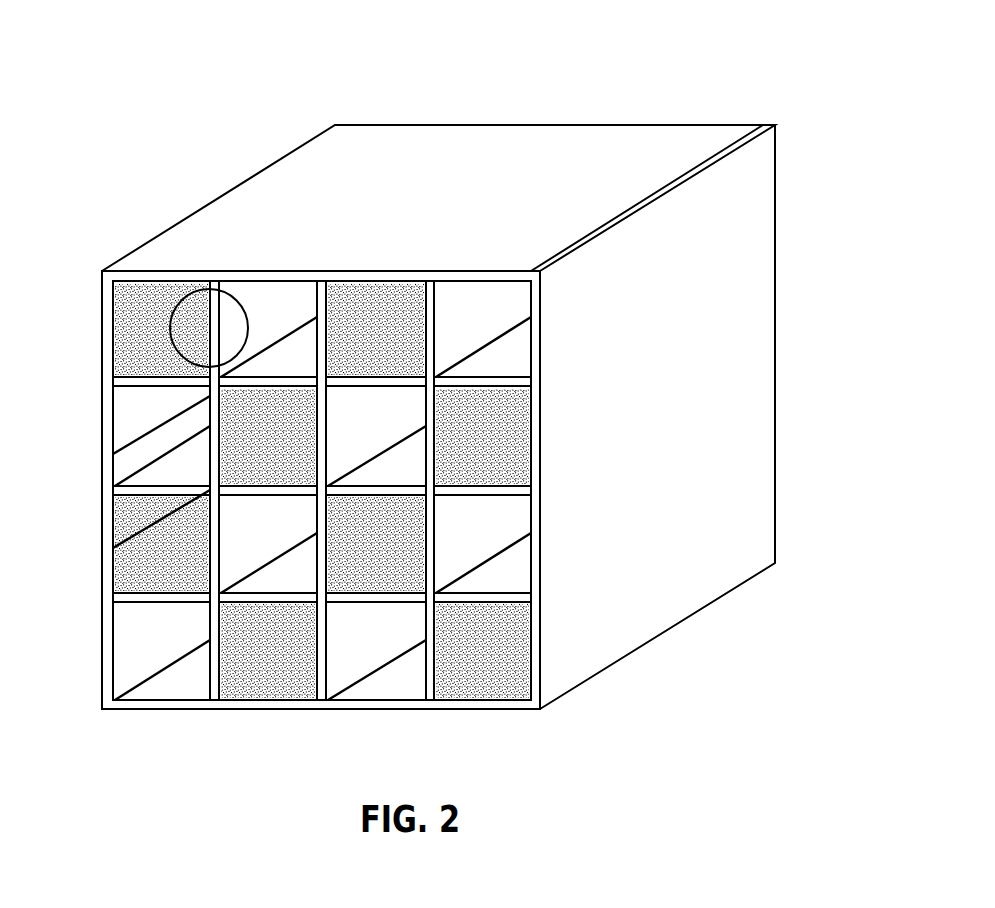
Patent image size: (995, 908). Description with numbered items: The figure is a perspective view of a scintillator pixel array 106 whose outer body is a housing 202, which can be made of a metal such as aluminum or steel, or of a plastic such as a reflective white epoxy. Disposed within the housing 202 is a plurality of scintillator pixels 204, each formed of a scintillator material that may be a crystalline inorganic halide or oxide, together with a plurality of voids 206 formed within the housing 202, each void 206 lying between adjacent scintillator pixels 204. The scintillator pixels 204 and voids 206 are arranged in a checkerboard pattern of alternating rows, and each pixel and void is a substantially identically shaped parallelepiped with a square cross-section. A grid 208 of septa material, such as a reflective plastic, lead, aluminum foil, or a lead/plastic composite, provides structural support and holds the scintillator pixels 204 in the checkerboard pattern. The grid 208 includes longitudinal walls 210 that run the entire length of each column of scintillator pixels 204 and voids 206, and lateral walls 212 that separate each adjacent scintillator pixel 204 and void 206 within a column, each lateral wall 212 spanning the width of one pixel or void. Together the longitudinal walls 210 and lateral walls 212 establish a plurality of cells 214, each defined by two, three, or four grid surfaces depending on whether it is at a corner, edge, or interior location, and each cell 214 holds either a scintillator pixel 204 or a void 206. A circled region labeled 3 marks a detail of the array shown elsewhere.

The scintillator pixel array 106 is at (342, 70).
The housing 202 is at (630, 645).
The scintillator pixel 204 is at (500, 687).
The void 206 is at (395, 685).
The grid 208 is at (113, 548).
The longitudinal wall 210 is at (213, 685).
The lateral wall 212 is at (175, 596).
The cell 214 is at (113, 454).
The detail region shown in FIG. 3 is at (179, 302).